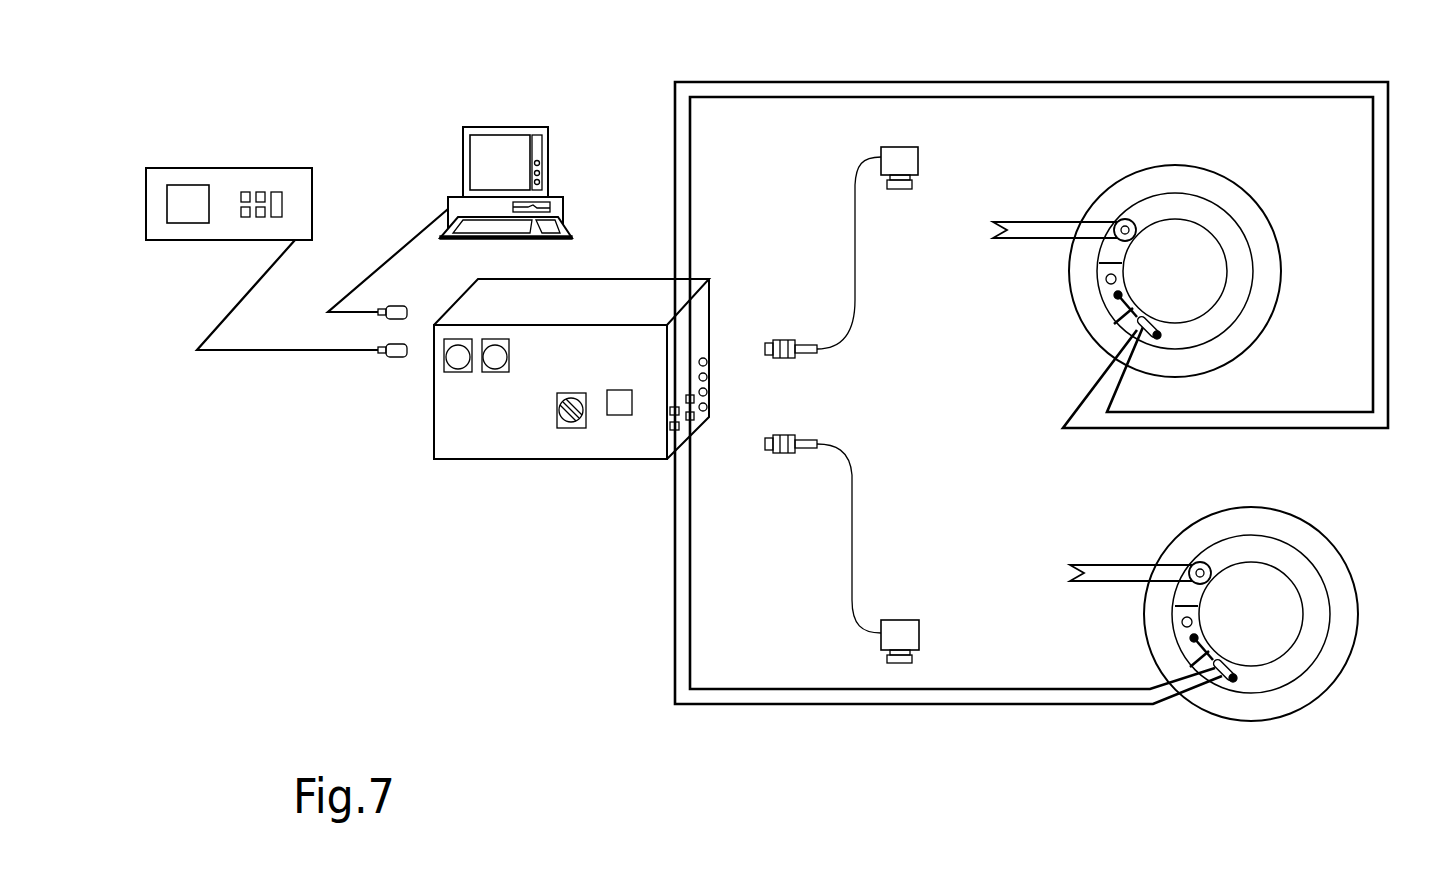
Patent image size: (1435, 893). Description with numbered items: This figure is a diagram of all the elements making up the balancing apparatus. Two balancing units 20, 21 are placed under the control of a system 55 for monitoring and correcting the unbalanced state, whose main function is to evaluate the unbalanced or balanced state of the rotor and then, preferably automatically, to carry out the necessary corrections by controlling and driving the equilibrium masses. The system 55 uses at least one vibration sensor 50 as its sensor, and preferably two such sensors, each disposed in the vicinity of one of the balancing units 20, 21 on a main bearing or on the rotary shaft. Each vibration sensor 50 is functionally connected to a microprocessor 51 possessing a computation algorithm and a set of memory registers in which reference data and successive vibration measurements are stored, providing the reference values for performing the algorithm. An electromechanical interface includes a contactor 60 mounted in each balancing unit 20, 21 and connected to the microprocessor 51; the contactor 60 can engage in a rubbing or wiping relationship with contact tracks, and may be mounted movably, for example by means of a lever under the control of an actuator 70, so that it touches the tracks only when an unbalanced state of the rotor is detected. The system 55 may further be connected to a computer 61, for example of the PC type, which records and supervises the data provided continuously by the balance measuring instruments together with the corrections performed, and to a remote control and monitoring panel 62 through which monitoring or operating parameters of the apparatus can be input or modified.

The balancing unit 20 is at (1263, 199).
The balancing unit 21 is at (1355, 573).
The vibration sensor 50 is at (918, 173).
The microprocessor 51 is at (512, 452).
The system for monitoring and correcting the unbalanced state 55 is at (578, 513).
The contactor 60 is at (1128, 329).
The computer 61 is at (517, 127).
The remote control and monitoring panel 62 is at (293, 168).
The actuator 70 is at (1122, 303).